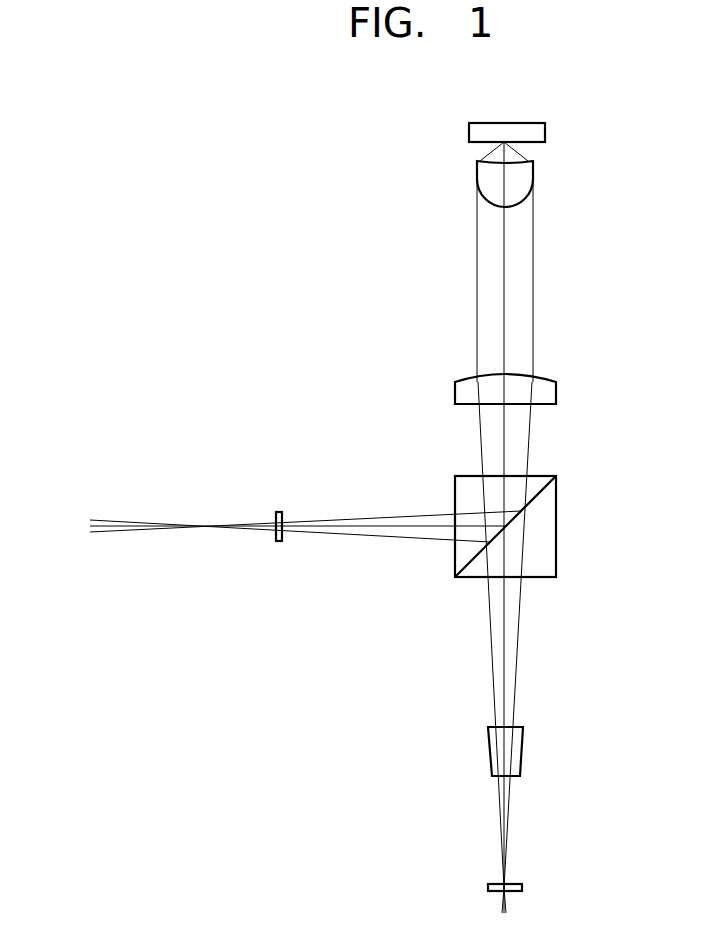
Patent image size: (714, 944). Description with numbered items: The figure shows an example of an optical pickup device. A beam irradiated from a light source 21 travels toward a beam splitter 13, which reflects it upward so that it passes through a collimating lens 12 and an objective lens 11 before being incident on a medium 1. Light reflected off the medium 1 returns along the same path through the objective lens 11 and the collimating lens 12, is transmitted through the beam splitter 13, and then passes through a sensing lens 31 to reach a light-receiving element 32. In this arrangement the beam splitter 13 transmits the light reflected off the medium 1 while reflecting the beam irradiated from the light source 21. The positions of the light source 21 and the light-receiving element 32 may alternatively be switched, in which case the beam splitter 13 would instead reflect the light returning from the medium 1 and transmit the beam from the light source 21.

The medium 1 is at (545, 131).
The objective lens 11 is at (533, 165).
The collimating lens 12 is at (556, 393).
The beam splitter 13 is at (556, 527).
The light source 21 is at (280, 512).
The sensing lens 31 is at (523, 750).
The light-receiving element 32 is at (522, 888).